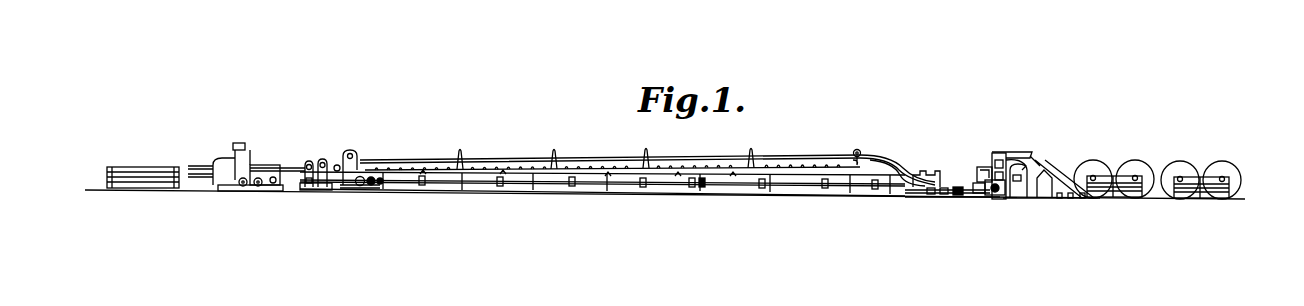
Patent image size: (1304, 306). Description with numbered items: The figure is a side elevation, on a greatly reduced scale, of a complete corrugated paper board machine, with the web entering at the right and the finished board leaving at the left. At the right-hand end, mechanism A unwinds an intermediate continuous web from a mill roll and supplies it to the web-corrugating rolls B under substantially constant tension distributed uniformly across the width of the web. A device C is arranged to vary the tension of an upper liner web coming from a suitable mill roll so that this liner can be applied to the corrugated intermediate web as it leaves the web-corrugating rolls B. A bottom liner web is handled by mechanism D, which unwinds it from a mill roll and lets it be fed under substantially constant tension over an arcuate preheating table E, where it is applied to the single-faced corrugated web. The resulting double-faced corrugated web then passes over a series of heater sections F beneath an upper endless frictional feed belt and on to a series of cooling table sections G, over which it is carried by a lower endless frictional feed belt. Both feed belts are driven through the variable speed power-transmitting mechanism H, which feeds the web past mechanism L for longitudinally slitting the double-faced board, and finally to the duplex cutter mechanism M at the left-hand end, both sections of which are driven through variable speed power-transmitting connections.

The mechanism for unwinding an intermediate continuous web A is at (1031, 156).
The web-corrugating rolls B is at (997, 152).
The device for varying the tension of the upper liner web C is at (977, 168).
The mechanism for unwinding the bottom liner web D is at (958, 191).
The arcuate preheating table E is at (903, 191).
The heater sections F is at (608, 194).
The cooling table sections G is at (395, 193).
The variable speed power-transmitting mechanism H is at (367, 190).
The slitting mechanism L is at (318, 190).
The duplex cutter mechanism M is at (252, 187).